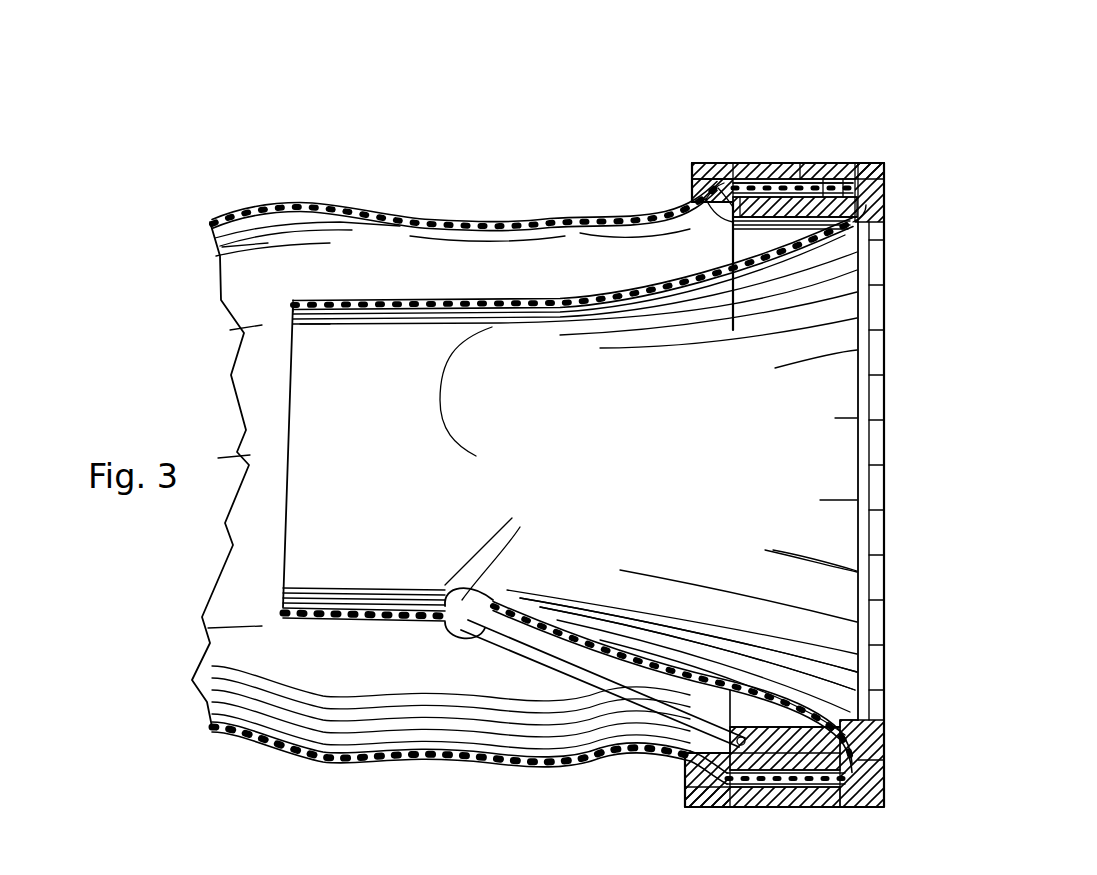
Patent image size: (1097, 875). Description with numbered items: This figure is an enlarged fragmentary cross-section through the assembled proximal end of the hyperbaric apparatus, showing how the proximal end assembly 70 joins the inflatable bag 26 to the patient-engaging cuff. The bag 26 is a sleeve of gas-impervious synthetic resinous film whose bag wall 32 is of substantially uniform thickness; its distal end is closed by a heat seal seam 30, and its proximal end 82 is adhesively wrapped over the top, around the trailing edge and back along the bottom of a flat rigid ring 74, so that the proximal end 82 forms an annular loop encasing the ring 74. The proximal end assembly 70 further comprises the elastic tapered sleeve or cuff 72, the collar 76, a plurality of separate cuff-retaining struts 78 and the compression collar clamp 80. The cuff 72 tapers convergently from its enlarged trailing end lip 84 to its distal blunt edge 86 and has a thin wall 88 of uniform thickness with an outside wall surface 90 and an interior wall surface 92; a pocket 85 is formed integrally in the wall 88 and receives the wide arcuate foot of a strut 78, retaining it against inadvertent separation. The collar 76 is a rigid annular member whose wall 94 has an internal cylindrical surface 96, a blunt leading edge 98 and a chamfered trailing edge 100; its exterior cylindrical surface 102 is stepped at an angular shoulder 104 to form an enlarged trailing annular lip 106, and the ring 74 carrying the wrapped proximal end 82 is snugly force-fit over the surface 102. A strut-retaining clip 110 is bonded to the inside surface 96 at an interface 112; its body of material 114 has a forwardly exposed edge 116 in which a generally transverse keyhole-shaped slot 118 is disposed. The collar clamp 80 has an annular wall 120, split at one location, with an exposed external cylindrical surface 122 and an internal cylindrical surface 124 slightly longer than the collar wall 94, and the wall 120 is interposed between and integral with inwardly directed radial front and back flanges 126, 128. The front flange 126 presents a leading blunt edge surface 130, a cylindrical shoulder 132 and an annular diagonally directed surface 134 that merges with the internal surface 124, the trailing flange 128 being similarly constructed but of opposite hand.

The bag 26 is at (272, 204).
The heat seal seam 30 is at (310, 217).
The bag wall 32 is at (233, 212).
The proximal end assembly 70 is at (784, 440).
The elastic tapered sleeve or cuff 72 is at (570, 297).
The ring 74 is at (744, 180).
The collar 76 is at (749, 240).
The cuff-retaining strut 78 is at (566, 671).
The compression collar clamp 80 is at (708, 150).
The proximal end of the bag 82 is at (721, 214).
The trailing end lip 84 is at (824, 178).
The pocket 85 is at (482, 592).
The distal blunt edge 86 is at (288, 300).
The cuff wall 88 is at (403, 305).
The outside wall surface 90 is at (316, 302).
The interior wall surface 92 is at (353, 313).
The collar wall 94 is at (797, 232).
The internal cylindrical surface 96 is at (777, 220).
The blunt leading edge 98 is at (712, 237).
The chamfered trailing edge 100 is at (840, 236).
The exterior cylindrical surface 102 is at (756, 183).
The angular shoulder 104 is at (812, 809).
The trailing annular lip 106 is at (840, 810).
The strut-retaining clip 110 is at (773, 598).
The interface 112 is at (770, 722).
The body of material 114 is at (775, 740).
The forwardly exposed edge 116 is at (733, 643).
The keyhole-shaped slot 118 is at (742, 630).
The annular wall 120 is at (735, 163).
The external cylindrical surface 122 is at (844, 187).
The internal cylindrical surface 124 is at (810, 180).
The front flange 126 is at (708, 200).
The back flange 128 is at (885, 215).
The leading blunt edge surface 130 is at (703, 207).
The cylindrical shoulder 132 is at (694, 212).
The annular diagonally directed surface 134 is at (702, 178).